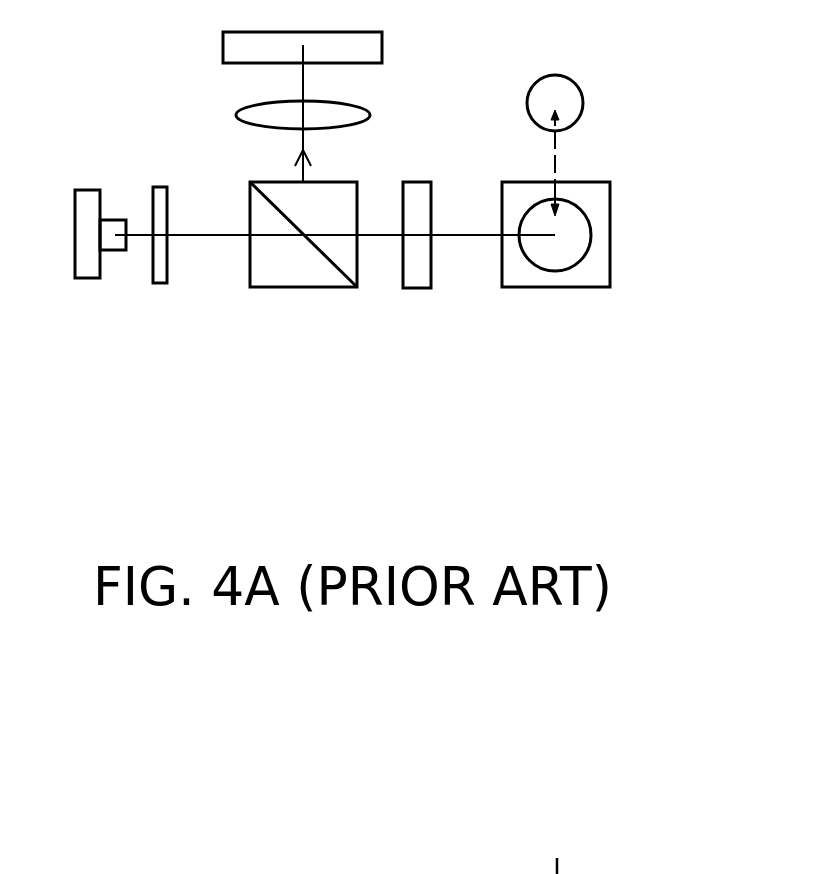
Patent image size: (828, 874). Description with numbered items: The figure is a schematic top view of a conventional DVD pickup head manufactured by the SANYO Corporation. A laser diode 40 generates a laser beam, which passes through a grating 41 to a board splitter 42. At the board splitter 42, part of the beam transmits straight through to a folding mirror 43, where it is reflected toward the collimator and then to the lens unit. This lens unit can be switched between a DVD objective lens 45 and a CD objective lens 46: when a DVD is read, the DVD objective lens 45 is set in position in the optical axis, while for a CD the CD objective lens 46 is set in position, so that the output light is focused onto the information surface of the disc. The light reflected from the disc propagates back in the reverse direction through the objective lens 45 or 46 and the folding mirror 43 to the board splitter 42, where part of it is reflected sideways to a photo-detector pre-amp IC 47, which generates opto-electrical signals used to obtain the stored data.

The laser diode 40 is at (82, 280).
The grating 41 is at (158, 284).
The board splitter 42 is at (303, 289).
The folding mirror 43 is at (558, 289).
The DVD objective lens 45 is at (590, 222).
The CD objective lens 46 is at (582, 100).
The photo-detector pre-amp IC 47 is at (383, 39).